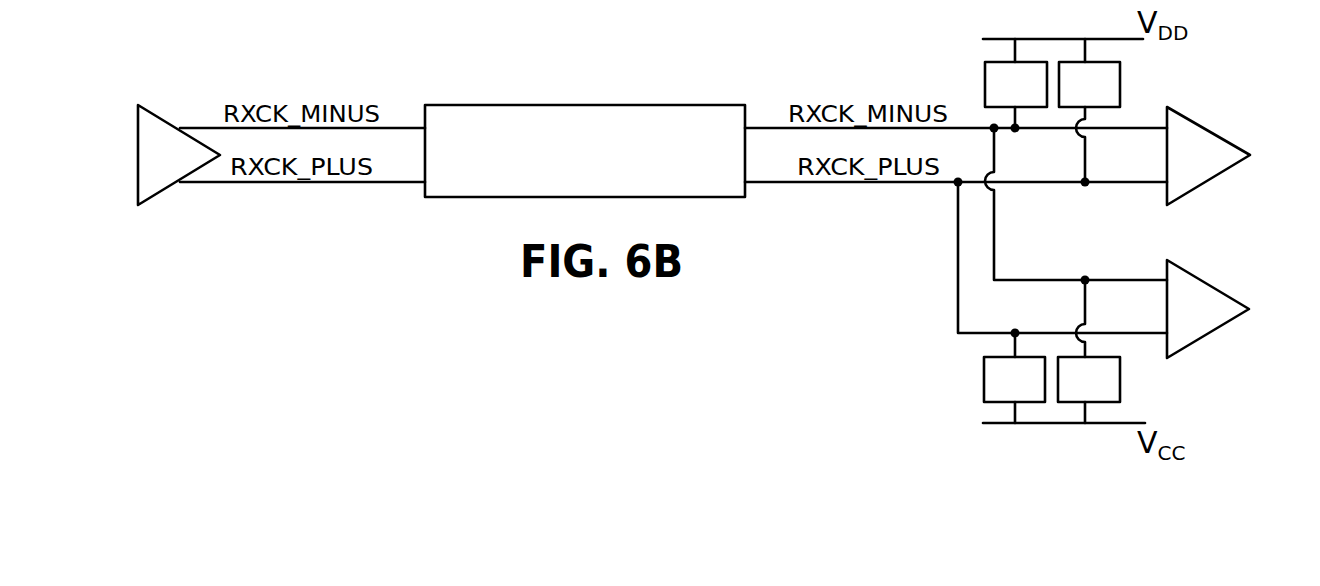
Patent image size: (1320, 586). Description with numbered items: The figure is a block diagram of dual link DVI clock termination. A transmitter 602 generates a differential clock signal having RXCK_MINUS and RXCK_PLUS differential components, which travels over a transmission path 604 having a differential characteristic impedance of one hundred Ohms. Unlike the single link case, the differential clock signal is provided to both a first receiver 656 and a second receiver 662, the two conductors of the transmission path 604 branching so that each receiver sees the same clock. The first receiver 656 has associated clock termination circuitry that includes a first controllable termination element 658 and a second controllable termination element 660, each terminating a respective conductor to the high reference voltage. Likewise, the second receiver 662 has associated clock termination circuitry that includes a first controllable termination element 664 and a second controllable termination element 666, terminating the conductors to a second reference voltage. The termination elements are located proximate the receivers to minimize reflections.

The transmitter 602 is at (140, 105).
The transmission path 604 is at (662, 105).
The first receiver 656 is at (1203, 126).
The first controllable termination element 658 is at (985, 83).
The second controllable termination element 660 is at (1120, 85).
The second receiver 662 is at (1200, 280).
The first controllable termination element 664 is at (984, 377).
The second controllable termination element 666 is at (1120, 378).